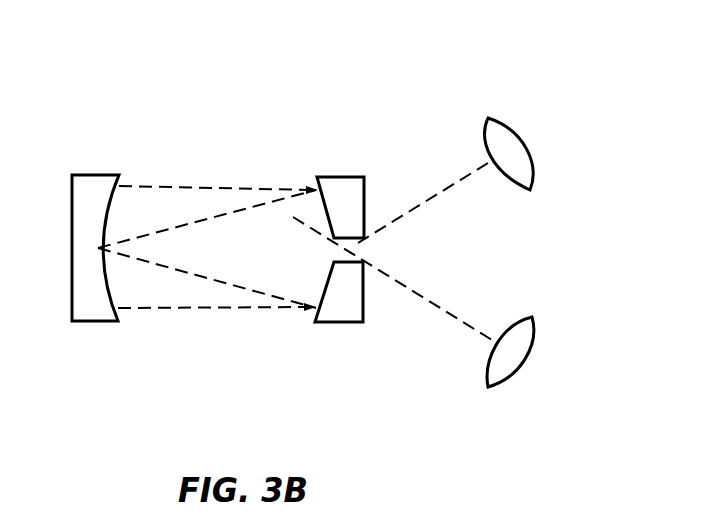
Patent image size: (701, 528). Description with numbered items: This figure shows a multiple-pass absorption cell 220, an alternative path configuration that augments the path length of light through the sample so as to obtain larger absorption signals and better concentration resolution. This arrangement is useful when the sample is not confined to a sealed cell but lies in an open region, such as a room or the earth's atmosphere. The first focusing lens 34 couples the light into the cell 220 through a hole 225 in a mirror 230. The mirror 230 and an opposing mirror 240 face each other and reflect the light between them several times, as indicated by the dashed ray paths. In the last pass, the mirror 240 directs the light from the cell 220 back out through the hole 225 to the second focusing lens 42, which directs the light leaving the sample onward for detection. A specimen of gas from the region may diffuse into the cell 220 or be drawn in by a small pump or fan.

The multiple-pass absorption cell 220 is at (125, 127).
The opposing mirror 240 is at (100, 316).
The mirror 230 is at (343, 316).
The hole 225 is at (366, 243).
The first focusing lens 34 is at (516, 129).
The second focusing lens 42 is at (535, 320).